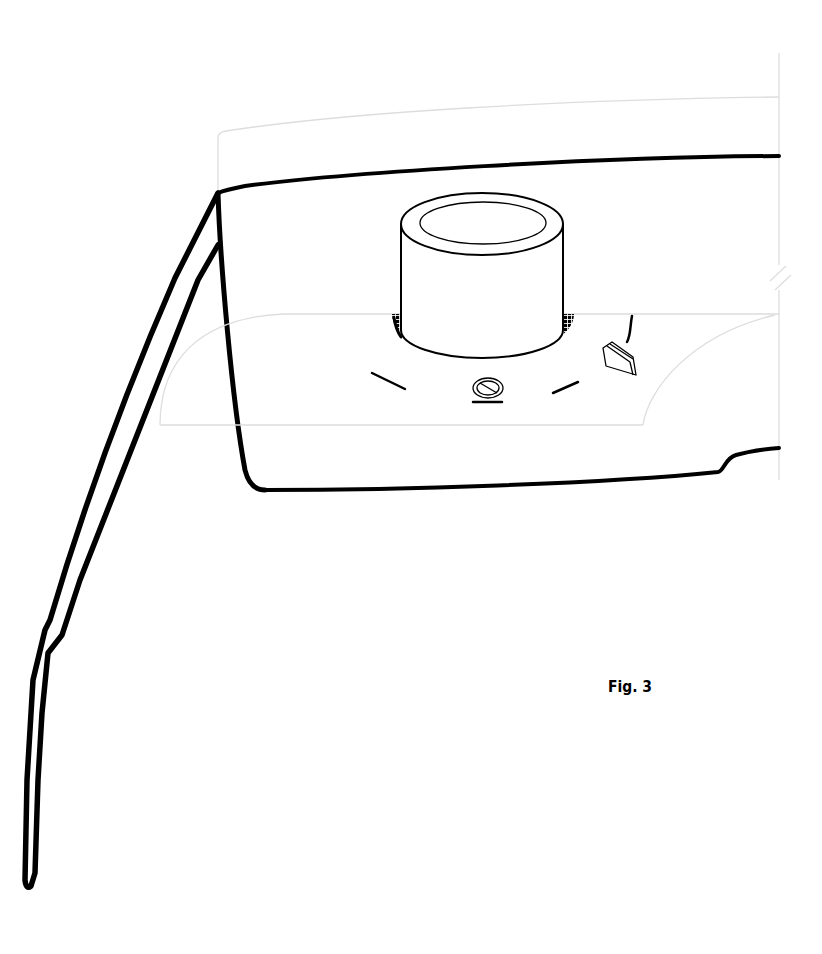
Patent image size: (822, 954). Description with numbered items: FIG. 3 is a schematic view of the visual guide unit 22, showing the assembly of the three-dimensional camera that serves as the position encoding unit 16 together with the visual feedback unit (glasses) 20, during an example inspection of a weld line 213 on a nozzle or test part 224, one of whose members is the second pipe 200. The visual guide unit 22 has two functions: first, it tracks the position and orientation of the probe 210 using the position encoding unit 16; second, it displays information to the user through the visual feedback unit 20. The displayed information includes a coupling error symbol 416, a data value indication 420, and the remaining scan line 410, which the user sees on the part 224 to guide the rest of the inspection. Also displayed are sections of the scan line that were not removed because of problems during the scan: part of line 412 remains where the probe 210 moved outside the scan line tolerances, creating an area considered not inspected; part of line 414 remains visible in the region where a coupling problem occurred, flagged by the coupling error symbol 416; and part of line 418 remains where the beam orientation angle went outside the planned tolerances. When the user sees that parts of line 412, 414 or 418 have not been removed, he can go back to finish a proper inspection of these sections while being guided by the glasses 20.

The position encoding unit 16 is at (622, 113).
The visual guide unit 22 is at (205, 115).
The visual feedback unit (glasses) 20 is at (395, 492).
The nozzle (test object or part) 224 is at (620, 412).
The probe 210 is at (658, 396).
The data value indication 420 is at (393, 316).
The second pipe 200 is at (547, 279).
The weld line 213 is at (574, 314).
The remaining scan line 410 is at (636, 316).
The part of line (un-inspected section) 412 is at (387, 380).
The coupling error symbol 416 is at (469, 393).
The part of line (coupling error section) 414 is at (483, 405).
The part of line (wrong beam orientation section) 418 is at (563, 395).